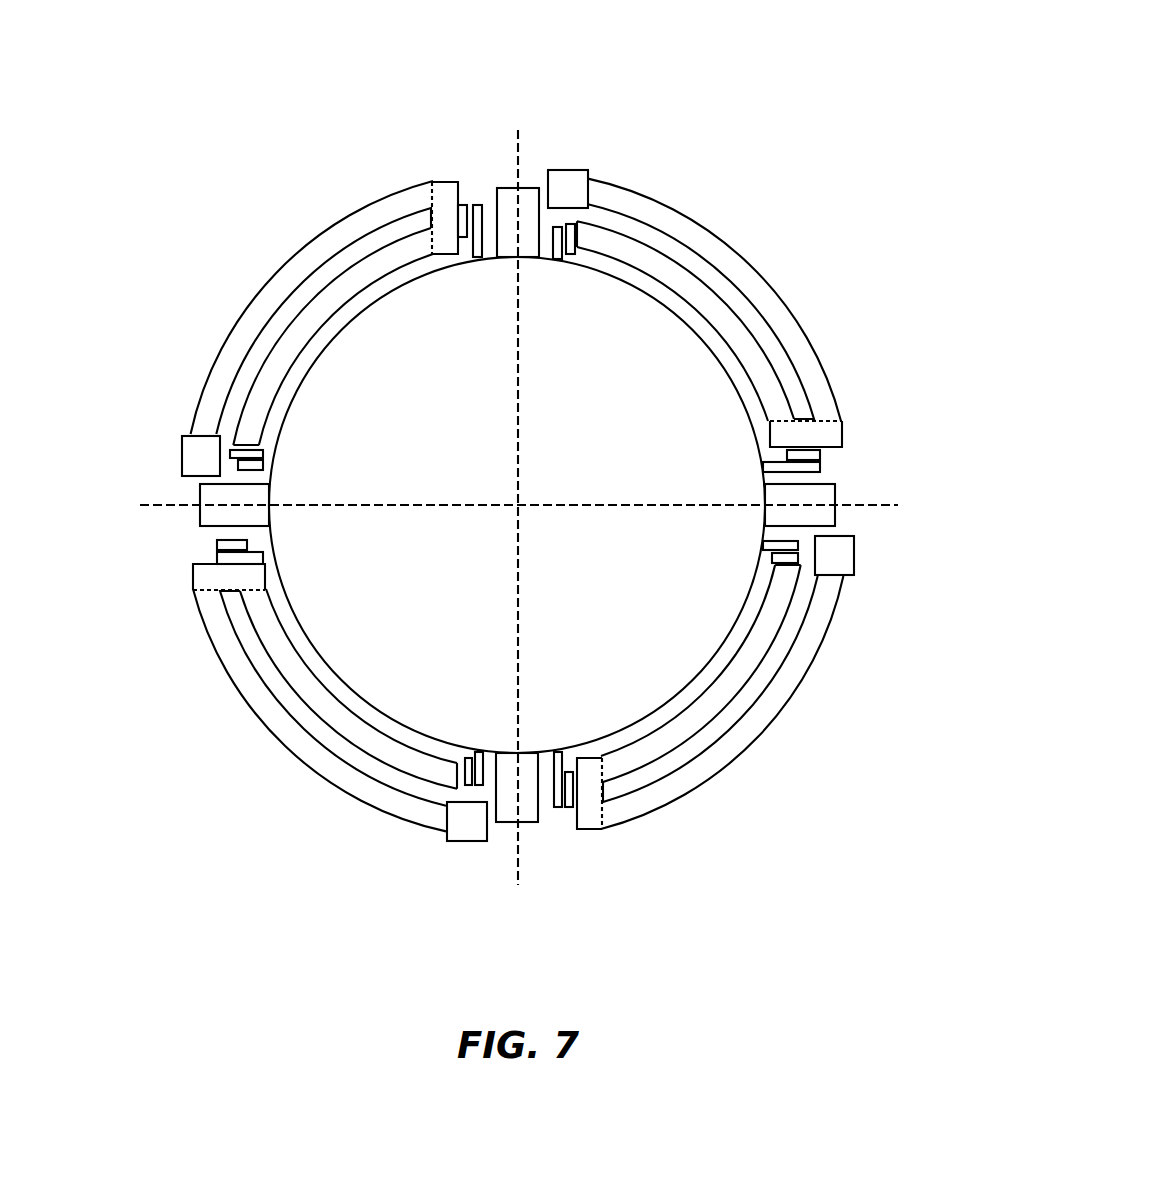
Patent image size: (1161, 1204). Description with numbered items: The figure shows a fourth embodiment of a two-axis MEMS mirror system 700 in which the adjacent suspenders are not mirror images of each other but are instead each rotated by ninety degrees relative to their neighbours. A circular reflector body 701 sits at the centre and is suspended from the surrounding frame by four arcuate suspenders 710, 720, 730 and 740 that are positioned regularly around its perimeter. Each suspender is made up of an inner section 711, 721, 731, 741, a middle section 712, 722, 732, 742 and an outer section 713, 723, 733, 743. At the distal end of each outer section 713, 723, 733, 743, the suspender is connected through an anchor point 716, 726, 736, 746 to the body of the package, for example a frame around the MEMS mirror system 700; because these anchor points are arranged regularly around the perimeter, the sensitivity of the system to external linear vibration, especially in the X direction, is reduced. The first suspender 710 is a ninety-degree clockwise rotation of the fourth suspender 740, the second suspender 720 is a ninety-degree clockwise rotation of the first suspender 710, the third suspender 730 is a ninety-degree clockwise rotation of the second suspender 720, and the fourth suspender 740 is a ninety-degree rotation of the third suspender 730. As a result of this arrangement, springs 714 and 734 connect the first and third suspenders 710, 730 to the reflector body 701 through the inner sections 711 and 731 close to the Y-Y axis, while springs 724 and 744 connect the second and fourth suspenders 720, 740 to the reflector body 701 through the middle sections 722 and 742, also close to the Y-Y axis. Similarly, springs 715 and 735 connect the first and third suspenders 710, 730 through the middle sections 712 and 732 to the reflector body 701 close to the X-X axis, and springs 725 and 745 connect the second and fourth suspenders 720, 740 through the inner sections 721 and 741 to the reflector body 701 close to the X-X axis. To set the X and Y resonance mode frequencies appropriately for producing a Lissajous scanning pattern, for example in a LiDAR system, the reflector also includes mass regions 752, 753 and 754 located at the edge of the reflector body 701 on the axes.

The MEMS mirror system 700 is at (757, 100).
The reflector body 701 is at (625, 727).
The first suspender 710 is at (676, 191).
The inner section of first suspender 711 is at (770, 357).
The middle section of first suspender 712 is at (843, 432).
The outer section of first suspender 713 is at (747, 257).
The spring 714 is at (566, 253).
The spring 715 is at (787, 457).
The anchor point 716 is at (570, 170).
The second suspender 720 is at (835, 677).
The inner section of second suspender 721 is at (770, 655).
The middle section of second suspender 722 is at (590, 830).
The outer section of second suspender 723 is at (745, 750).
The spring 724 is at (568, 772).
The spring 725 is at (763, 550).
The anchor point 726 is at (855, 558).
The third suspender 730 is at (161, 674).
The inner section of third suspender 731 is at (268, 655).
The middle section of third suspender 732 is at (195, 573).
The outer section of third suspender 733 is at (292, 752).
The spring 734 is at (473, 750).
The spring 735 is at (263, 562).
The anchor point 736 is at (468, 843).
The fourth suspender 740 is at (327, 191).
The inner section of fourth suspender 741 is at (268, 353).
The middle section of fourth suspender 742 is at (447, 183).
The outer section of fourth suspender 743 is at (292, 260).
The spring 744 is at (450, 262).
The spring 745 is at (263, 460).
The anchor point 746 is at (182, 447).
The mass region 752 is at (503, 262).
The mass region 753 is at (530, 752).
The mass region 754 is at (270, 520).